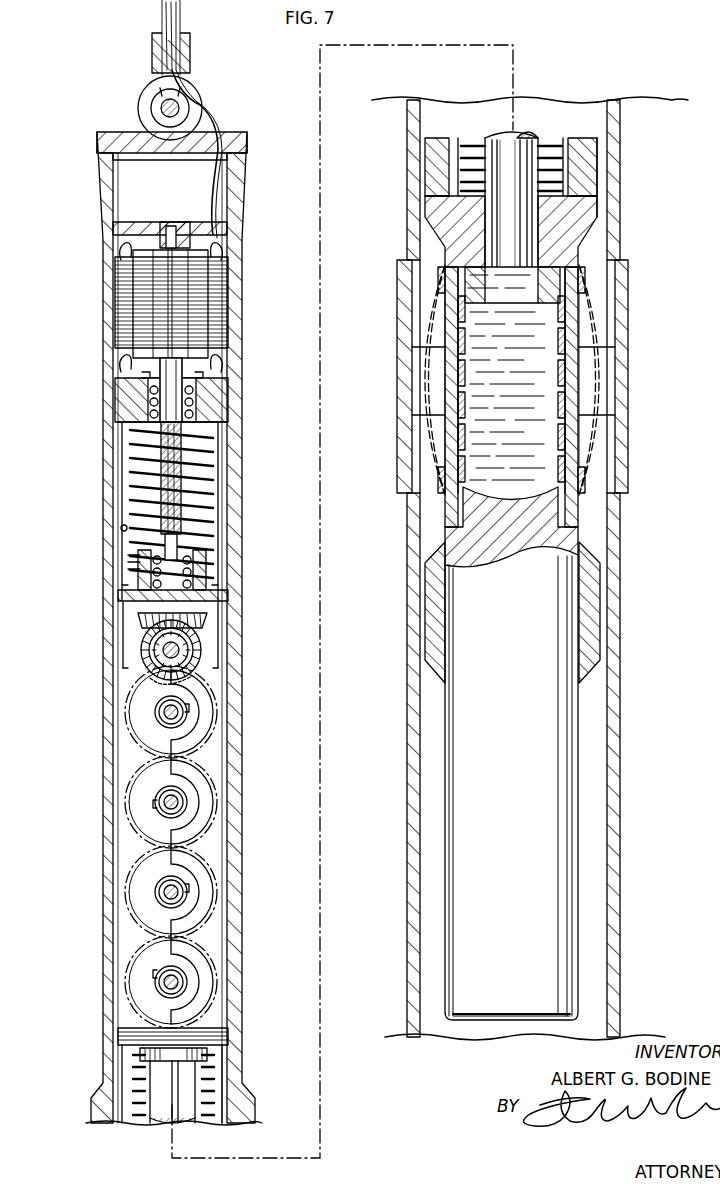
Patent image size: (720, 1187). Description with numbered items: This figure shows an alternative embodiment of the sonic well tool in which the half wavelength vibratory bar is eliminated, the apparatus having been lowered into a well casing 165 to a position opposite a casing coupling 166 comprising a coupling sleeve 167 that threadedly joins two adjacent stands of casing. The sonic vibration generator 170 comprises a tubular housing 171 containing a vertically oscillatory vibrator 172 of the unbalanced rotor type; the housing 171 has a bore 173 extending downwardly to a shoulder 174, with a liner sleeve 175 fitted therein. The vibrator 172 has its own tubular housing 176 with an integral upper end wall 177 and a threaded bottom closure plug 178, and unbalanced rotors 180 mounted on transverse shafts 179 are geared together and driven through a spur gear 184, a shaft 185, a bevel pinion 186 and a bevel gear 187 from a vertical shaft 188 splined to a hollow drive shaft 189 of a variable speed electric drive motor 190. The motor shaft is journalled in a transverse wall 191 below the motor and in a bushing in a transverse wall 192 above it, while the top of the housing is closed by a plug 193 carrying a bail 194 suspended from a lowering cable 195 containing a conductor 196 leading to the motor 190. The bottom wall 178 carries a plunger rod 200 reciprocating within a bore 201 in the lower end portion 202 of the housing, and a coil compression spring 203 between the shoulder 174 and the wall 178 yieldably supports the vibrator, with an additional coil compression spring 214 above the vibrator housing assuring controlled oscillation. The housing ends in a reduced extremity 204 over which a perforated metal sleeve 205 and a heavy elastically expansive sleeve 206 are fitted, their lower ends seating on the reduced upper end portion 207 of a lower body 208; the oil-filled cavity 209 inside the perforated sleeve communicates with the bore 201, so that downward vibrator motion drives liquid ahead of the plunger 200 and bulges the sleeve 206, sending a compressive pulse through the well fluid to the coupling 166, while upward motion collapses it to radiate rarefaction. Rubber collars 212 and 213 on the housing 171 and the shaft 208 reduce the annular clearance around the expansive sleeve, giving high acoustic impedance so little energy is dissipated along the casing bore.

The well casing 165 is at (407, 146).
The casing coupling 166 is at (403, 250).
The coupling sleeve 167 is at (402, 330).
The sonic vibration generator 170 is at (103, 463).
The tubular housing 171 is at (120, 592).
The vertically oscillatory vibrator 172 is at (214, 763).
The bore 173 is at (120, 528).
The shoulder 174 is at (432, 200).
The liner sleeve 175 is at (124, 562).
The vibrator housing 176 is at (125, 670).
The upper end wall 177 is at (125, 600).
The bottom closure plug 178 is at (124, 1036).
The transverse shafts 179 is at (163, 805).
The unbalanced rotors 180 is at (165, 770).
The spur gear 184 is at (198, 662).
The shaft 185 is at (190, 648).
The bevel pinion 186 is at (196, 672).
The bevel gear 187 is at (136, 630).
The vertical shaft 188 is at (183, 545).
The hollow drive shaft 189 is at (175, 447).
The variable speed electric drive motor 190 is at (117, 305).
The transverse wall 191 is at (122, 400).
The transverse wall 192 is at (130, 222).
The plug 193 is at (122, 132).
The bail 194 is at (150, 90).
The lowering cable 195 is at (160, 14).
The conductor 196 is at (192, 90).
The plunger rod 200 is at (162, 1125).
The bore 201 is at (532, 222).
The lower end portion 202 is at (582, 255).
The coil compression spring 203 is at (552, 140).
The reduced extremity 204 is at (556, 300).
The perforated metal sleeve 205 is at (582, 368).
The elastically expansive sleeve 206 is at (580, 385).
The reduced upper end portion 207 is at (548, 512).
The lower body 208 is at (566, 708).
The cavity 209 is at (532, 432).
The rubber collar 212 is at (596, 156).
The rubber collar 213 is at (598, 580).
The coil compression spring 214 is at (218, 474).